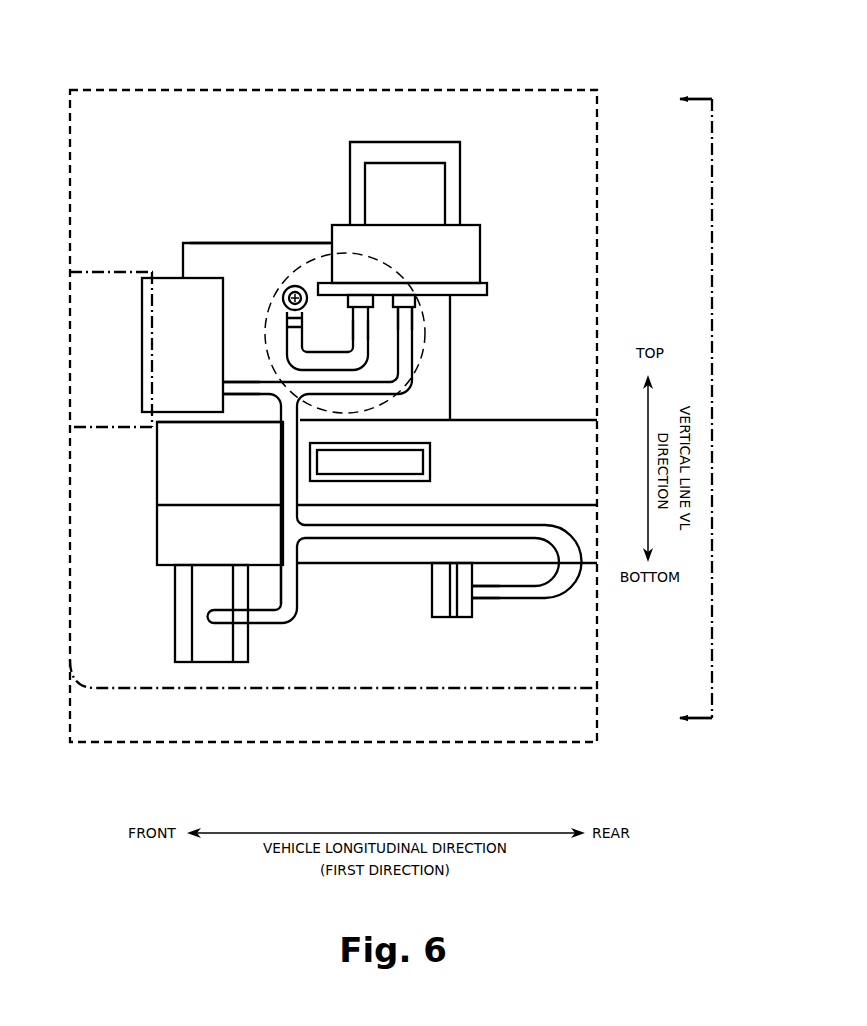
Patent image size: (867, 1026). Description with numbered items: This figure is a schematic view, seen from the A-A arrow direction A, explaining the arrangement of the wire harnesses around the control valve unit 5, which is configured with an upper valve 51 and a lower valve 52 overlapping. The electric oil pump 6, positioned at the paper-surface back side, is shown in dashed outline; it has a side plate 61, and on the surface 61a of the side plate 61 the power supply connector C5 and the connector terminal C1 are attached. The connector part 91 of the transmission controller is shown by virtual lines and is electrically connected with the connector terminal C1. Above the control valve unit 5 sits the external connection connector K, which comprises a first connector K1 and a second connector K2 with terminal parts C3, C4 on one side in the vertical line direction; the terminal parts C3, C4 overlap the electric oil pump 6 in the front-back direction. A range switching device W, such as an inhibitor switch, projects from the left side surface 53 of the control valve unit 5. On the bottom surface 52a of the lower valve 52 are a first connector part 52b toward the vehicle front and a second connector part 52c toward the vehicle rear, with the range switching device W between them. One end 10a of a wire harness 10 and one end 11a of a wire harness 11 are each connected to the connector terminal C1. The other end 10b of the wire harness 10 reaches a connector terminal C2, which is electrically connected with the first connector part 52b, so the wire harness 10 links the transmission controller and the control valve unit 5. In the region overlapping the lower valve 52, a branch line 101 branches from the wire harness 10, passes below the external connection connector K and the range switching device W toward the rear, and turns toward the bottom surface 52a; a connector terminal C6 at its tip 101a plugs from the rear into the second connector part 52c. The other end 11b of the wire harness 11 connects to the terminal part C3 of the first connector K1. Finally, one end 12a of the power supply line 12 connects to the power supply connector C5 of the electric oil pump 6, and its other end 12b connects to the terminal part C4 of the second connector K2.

The control valve unit 5 is at (47, 442).
The upper valve 51 is at (156, 465).
The lower valve 52 is at (156, 528).
The electric oil pump 6 is at (426, 291).
The wire harness 10 is at (280, 472).
The one end of wire harness 10a is at (222, 407).
The other end of wire harness 10b is at (208, 609).
The wire harness 11 is at (418, 343).
The one end of wire harness 11a is at (230, 388).
The other end of wire harness 11b is at (407, 312).
The power supply line 12 is at (330, 349).
The one end of power supply line 12a is at (286, 314).
The other end of power supply line 12b is at (362, 318).
The left side surface 53 is at (562, 437).
The side plate 61 is at (182, 240).
The surface 61a is at (207, 253).
The connector part 91 is at (112, 266).
The branch line 101 is at (380, 533).
The tip of branch line 101a is at (477, 594).
The bottom surface 52a is at (262, 575).
The first connector part 52b is at (172, 619).
The second connector part 52c is at (428, 606).
The connector terminal C1 is at (163, 274).
The connector terminal C2 is at (215, 650).
The terminal part C3 is at (420, 291).
The terminal part C4 is at (372, 296).
The power supply connector C5 is at (282, 286).
The connector terminal C6 is at (462, 607).
The external connection connector K is at (405, 116).
The first connector K1 is at (433, 157).
The second connector K2 is at (390, 136).
The range switching device W is at (435, 462).
The A-A arrow direction A is at (708, 408).